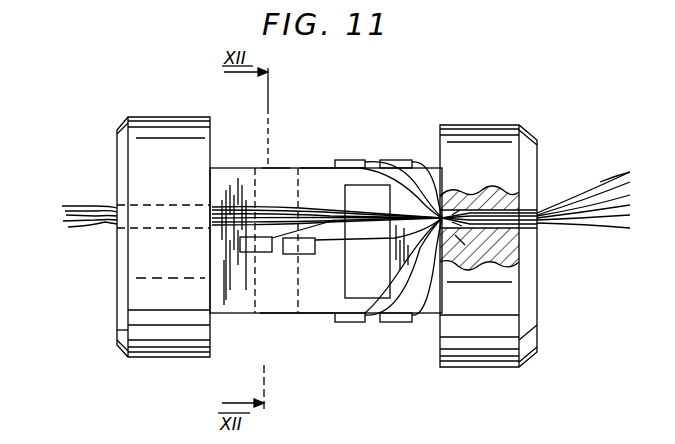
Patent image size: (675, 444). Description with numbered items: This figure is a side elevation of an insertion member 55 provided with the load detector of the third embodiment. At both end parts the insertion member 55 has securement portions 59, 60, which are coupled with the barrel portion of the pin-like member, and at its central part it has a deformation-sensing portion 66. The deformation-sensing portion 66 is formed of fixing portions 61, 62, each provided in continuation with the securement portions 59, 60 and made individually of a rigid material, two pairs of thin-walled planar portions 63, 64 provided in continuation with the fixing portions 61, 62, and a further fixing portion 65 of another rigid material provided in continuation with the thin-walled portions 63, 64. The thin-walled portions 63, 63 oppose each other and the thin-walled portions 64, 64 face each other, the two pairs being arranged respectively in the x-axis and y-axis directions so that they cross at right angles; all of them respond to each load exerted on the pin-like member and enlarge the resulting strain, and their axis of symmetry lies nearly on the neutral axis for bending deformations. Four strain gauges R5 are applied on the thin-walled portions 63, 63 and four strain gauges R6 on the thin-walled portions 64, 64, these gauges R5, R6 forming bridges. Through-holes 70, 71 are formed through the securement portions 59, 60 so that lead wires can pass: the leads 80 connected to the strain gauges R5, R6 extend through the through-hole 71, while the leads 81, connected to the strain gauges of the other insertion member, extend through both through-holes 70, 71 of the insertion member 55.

The insertion member 55 is at (455, 113).
The securement portion 59 is at (160, 117).
The securement portion 60 is at (503, 124).
The fixing portion 61 is at (238, 168).
The fixing portion 62 is at (418, 166).
The thin-walled planar portions 63 is at (280, 313).
The thin-walled planar portions 64 is at (374, 162).
The fixing portion 65 is at (318, 168).
The deformation-sensing portion 66 is at (272, 168).
The through-hole 70 is at (140, 232).
The through-hole 71 is at (537, 187).
The leads 80 is at (604, 175).
The leads 81 is at (80, 205).
The strain gauges R5 is at (246, 256).
The strain gauges R6 is at (348, 160).